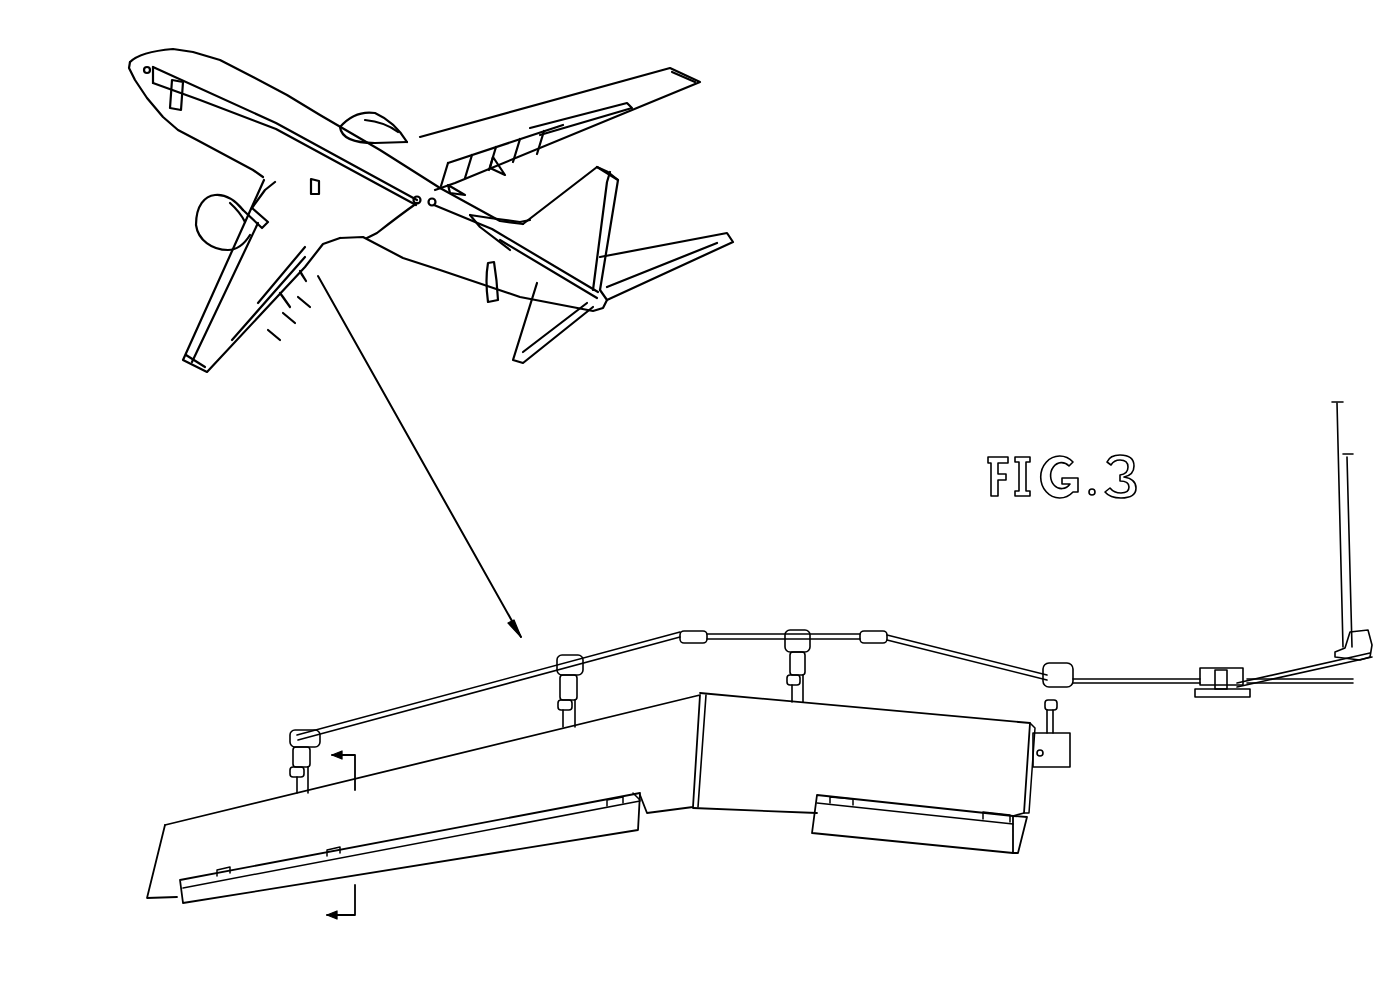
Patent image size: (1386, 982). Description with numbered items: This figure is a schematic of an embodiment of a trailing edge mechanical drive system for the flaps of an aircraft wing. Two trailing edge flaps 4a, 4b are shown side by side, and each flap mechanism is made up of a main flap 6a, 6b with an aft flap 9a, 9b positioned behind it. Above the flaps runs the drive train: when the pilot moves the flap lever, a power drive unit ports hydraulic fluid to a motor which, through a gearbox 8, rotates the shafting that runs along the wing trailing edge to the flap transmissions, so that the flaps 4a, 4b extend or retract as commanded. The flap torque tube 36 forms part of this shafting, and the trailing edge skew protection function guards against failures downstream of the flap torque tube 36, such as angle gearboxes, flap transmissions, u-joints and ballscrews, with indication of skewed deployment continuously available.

The trailing edge flap 4a is at (864, 806).
The trailing edge flap 4b is at (423, 810).
The main flap 6a is at (956, 769).
The main flap 6b is at (566, 779).
The aft flap 9a is at (912, 830).
The aft flap 9b is at (600, 828).
The flap torque tube 36 is at (1128, 680).
The gearbox 8 is at (1073, 687).